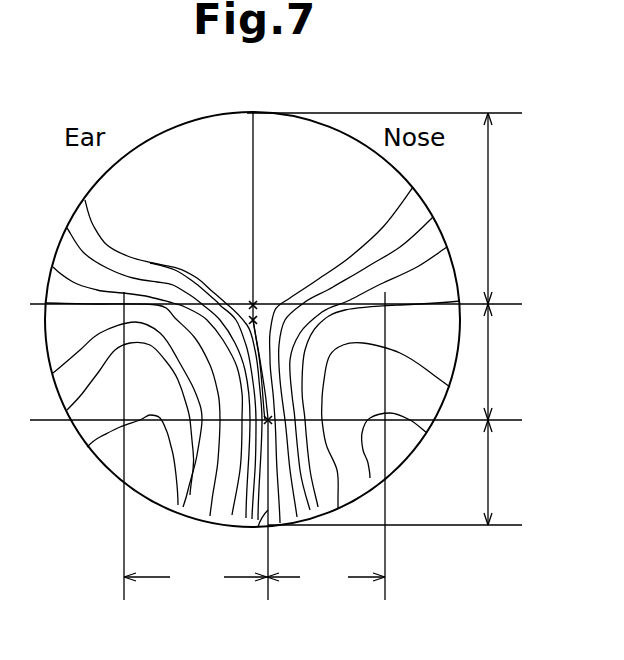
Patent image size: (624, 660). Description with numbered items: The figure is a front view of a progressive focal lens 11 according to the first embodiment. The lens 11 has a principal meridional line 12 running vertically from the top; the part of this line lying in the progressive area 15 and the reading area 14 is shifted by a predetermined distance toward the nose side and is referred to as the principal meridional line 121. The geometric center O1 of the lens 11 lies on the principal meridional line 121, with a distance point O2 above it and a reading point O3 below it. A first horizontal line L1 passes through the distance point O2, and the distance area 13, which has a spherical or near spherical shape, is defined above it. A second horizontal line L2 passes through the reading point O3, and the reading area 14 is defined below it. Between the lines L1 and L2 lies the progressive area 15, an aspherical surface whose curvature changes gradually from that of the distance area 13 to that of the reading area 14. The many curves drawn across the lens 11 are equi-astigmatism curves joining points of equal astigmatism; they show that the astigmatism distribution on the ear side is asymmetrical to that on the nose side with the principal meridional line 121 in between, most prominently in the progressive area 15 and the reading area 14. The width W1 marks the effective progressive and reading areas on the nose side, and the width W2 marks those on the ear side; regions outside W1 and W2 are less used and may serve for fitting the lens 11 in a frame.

The lens 11 is at (330, 114).
The principal meridional line 12 is at (253, 187).
The distance area 13 is at (485, 208).
The reading area 14 is at (486, 472).
The progressive area 15 is at (485, 362).
The principal meridional line 121 is at (265, 512).
The geometric center O1 is at (258, 319).
The distance point O2 is at (252, 304).
The reading point O3 is at (269, 419).
The first horizontal line L1 is at (508, 304).
The second horizontal line L2 is at (512, 420).
The effective progressive and reading areas on the nose side W1 is at (326, 578).
The effective progressive and reading areas on the ear side W2 is at (195, 578).